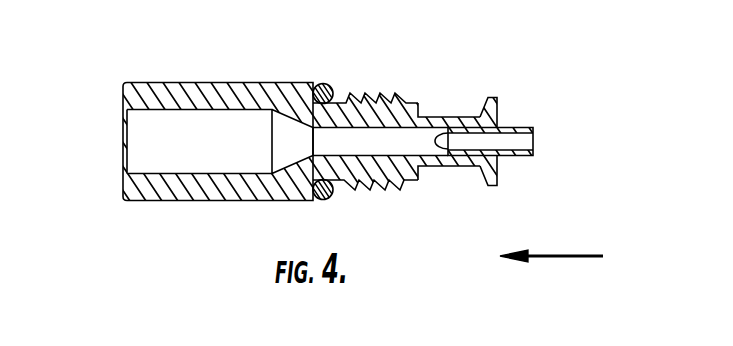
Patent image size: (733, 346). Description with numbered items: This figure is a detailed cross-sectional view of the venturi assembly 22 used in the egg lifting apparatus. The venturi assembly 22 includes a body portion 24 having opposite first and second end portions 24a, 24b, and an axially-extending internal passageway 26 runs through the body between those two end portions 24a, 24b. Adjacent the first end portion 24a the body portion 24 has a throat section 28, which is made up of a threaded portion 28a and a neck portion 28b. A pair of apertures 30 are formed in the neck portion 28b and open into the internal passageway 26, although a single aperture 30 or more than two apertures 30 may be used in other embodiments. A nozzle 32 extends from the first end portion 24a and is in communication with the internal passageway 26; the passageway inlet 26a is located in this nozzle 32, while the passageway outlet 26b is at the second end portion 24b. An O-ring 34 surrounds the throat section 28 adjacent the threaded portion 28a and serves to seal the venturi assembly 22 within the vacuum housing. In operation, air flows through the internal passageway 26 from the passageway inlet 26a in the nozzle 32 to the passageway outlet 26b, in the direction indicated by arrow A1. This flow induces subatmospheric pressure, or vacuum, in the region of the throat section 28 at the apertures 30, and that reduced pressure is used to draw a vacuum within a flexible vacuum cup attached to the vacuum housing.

The venturi assembly 22 is at (331, 127).
The body portion 24 is at (331, 107).
The first end portion 24a is at (496, 101).
The second end portion 24b is at (123, 100).
The internal passageway 26 is at (210, 132).
The passageway inlet 26a is at (535, 140).
The passageway outlet 26b is at (125, 165).
The throat section 28 is at (331, 127).
The threaded portion 28a is at (349, 93).
The neck portion 28b is at (439, 166).
The aperture 30 is at (421, 117).
The nozzle 32 is at (331, 158).
The O-ring 34 is at (333, 194).
The arrow A1 is at (552, 259).